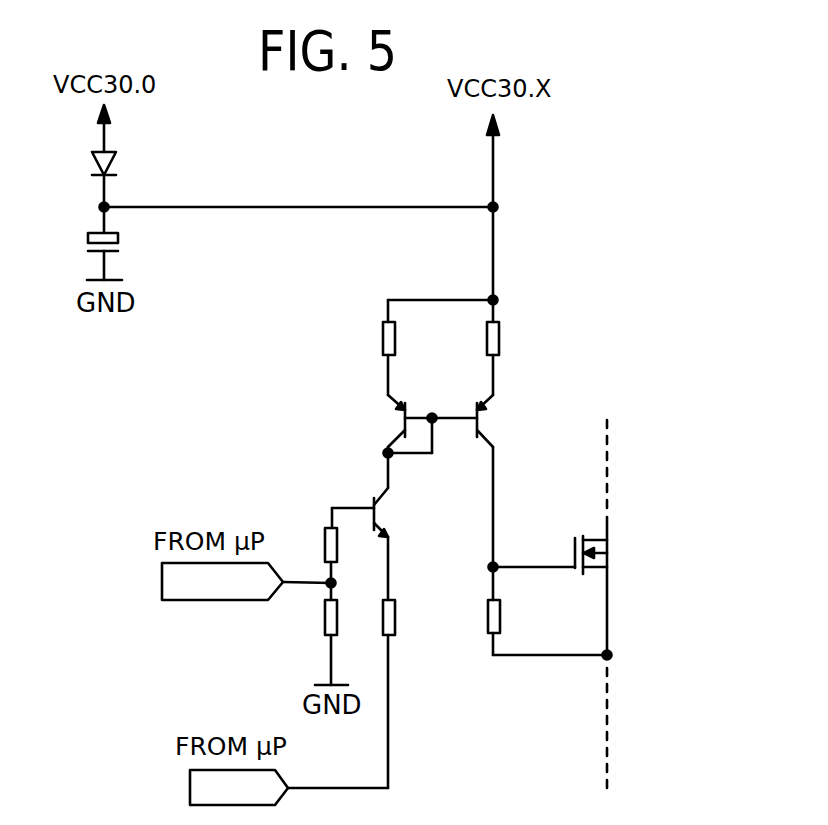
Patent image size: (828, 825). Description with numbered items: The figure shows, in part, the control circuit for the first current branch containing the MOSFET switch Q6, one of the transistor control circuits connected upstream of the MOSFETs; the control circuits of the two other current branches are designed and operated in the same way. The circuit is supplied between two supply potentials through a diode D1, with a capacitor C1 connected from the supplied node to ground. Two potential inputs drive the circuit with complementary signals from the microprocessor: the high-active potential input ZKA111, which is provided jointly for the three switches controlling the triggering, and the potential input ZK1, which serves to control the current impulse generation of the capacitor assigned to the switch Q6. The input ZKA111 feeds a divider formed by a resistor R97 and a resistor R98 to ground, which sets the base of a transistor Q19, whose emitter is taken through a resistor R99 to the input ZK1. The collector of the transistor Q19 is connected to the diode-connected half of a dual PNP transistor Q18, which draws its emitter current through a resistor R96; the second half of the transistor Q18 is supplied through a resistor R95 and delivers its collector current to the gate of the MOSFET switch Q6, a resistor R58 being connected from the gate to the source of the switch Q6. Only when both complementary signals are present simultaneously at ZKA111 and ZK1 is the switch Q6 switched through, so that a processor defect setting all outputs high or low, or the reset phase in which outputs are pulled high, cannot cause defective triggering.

The diode IN4004 D1 is at (151, 158).
The capacitor 100 microfarad C1 is at (137, 244).
The resistor 4.7K R96 is at (359, 338).
The resistor 1K R95 is at (526, 338).
The dual PNP transistor BCV62 Q18 is at (507, 408).
The NPN transistor BC847 Q19 is at (426, 511).
The resistor 1K R97 is at (306, 534).
The resistor 10K R98 is at (303, 625).
The resistor 15K R99 is at (419, 613).
The resistor 15K R58 is at (522, 613).
The MOSFET switch Q6 is at (607, 586).
The high-active potential input ZKA111 is at (246, 581).
The potential input ZK1 is at (239, 787).